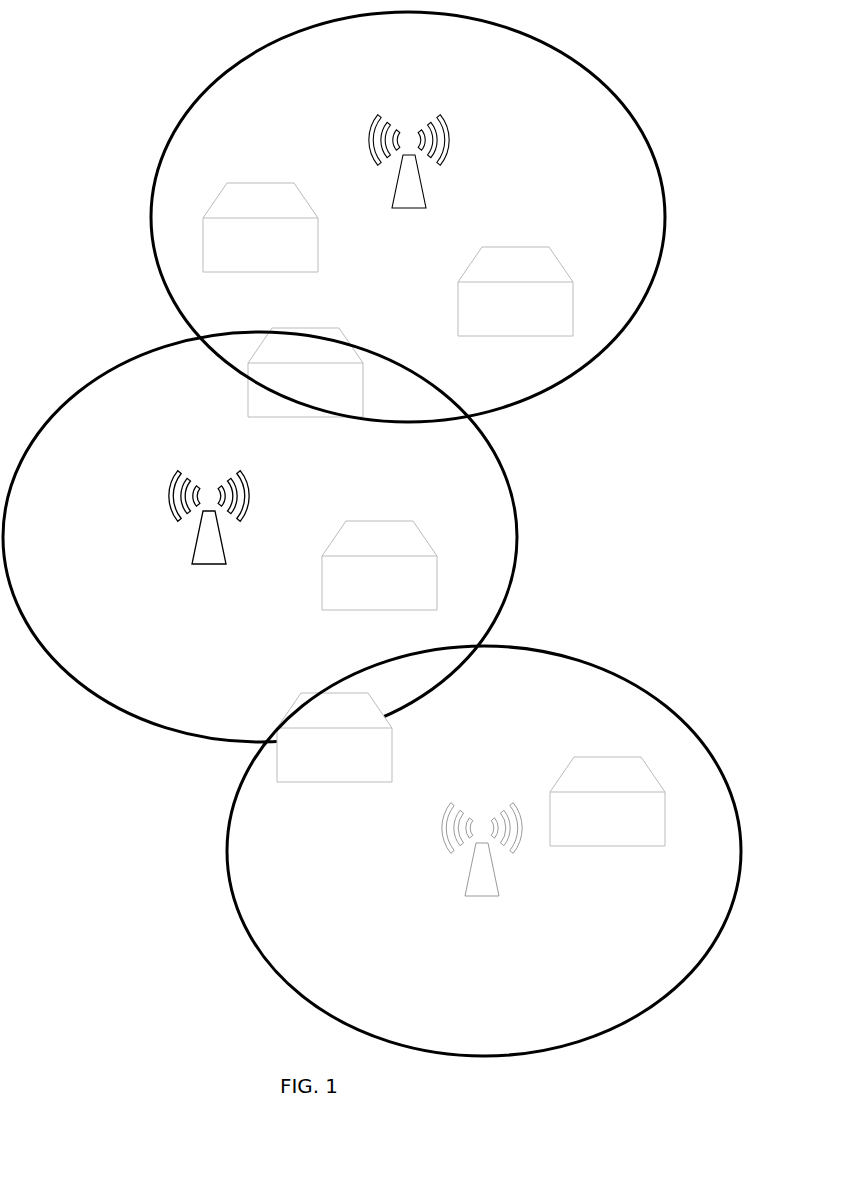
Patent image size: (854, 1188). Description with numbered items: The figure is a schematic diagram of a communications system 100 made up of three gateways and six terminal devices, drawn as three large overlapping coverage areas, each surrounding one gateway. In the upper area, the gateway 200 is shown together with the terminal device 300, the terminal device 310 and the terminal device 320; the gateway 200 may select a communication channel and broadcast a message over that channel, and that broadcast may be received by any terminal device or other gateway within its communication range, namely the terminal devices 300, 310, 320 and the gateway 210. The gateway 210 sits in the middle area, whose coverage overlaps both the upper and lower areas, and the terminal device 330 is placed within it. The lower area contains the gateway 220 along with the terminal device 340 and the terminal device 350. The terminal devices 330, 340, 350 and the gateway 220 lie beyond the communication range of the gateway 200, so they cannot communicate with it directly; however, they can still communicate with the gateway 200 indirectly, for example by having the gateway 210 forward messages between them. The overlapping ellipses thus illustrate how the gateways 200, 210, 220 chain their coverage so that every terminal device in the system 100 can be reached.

The communications system 100 is at (118, 1001).
The gateway 200 is at (409, 176).
The gateway 210 is at (210, 533).
The gateway 220 is at (483, 865).
The terminal device 300 is at (269, 243).
The terminal device 310 is at (306, 389).
The terminal device 320 is at (515, 322).
The terminal device 330 is at (378, 581).
The terminal device 340 is at (334, 753).
The terminal device 350 is at (609, 817).